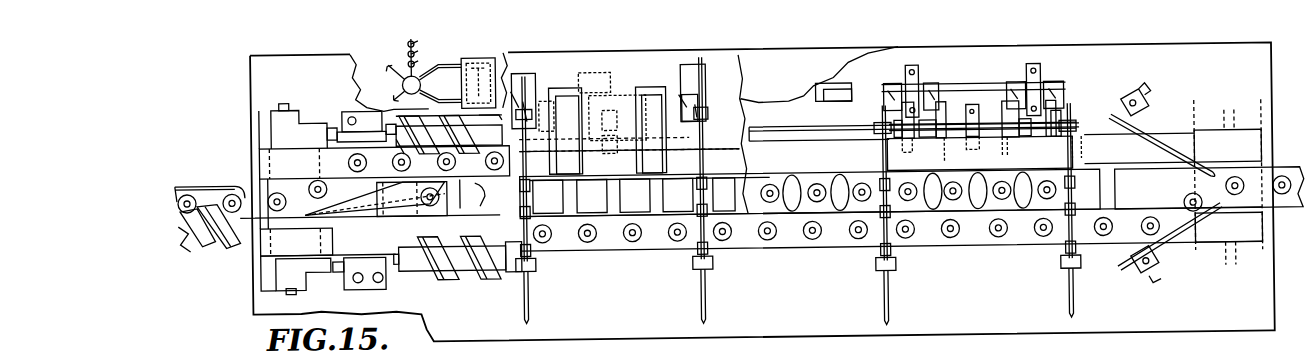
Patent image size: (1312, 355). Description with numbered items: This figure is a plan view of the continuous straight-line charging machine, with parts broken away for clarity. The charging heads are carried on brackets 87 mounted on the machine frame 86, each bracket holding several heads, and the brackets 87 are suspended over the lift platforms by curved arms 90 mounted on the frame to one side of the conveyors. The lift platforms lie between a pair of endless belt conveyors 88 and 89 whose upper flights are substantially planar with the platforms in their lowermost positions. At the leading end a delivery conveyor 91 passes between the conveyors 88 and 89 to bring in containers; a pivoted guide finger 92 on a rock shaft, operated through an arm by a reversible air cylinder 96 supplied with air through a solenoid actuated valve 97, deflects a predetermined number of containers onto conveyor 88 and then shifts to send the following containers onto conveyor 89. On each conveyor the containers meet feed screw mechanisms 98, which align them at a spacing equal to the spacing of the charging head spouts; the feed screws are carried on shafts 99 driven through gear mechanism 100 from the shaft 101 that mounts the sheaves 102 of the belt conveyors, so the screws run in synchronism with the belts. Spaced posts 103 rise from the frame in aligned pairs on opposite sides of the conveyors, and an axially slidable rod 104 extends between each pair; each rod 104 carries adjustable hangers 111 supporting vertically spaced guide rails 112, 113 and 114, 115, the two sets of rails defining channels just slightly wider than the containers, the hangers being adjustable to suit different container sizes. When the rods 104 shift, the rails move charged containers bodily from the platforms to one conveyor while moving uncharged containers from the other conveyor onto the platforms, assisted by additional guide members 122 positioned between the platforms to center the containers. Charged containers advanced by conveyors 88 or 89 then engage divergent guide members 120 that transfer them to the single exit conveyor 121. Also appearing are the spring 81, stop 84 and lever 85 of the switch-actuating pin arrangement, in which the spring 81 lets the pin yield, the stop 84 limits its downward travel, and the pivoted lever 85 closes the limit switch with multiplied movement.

The spring 81 is at (470, 203).
The stop 84 is at (296, 242).
The lever 85 is at (308, 285).
The machine frame 86 is at (257, 300).
The brackets 87 is at (532, 120).
The belt conveyor 88 is at (260, 152).
The belt conveyor 89 is at (262, 252).
The curved arms 90 is at (565, 90).
The delivery conveyor 91 is at (245, 192).
The pivoted guide finger 92 is at (200, 247).
The reversible air cylinder 96 is at (478, 60).
The solenoid actuated valve 97 is at (425, 48).
The feed screw mechanisms 98 is at (393, 105).
The shafts 99 is at (344, 115).
The gear mechanism 100 is at (310, 108).
The shaft 101 is at (286, 103).
The sheaves 102 is at (262, 140).
The posts 103 is at (535, 263).
The rod 104 is at (530, 300).
The adjustable hangers 111 is at (522, 270).
The guide rail 112 is at (605, 250).
The guide rail 113 is at (1082, 212).
The guide rail 114 is at (1080, 200).
The guide rail 115 is at (815, 180).
The divergent guide members 120 is at (1158, 130).
The exit conveyor 121 is at (1280, 168).
The guide members 122 is at (798, 175).